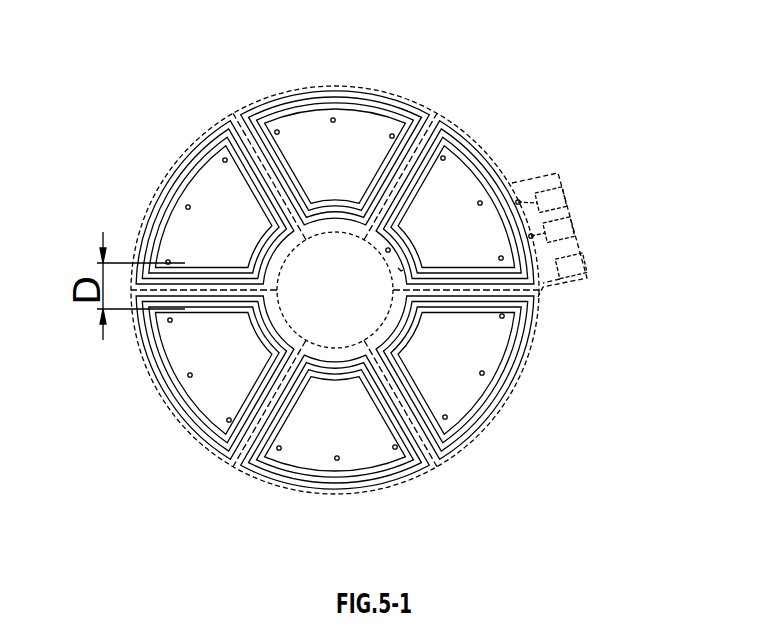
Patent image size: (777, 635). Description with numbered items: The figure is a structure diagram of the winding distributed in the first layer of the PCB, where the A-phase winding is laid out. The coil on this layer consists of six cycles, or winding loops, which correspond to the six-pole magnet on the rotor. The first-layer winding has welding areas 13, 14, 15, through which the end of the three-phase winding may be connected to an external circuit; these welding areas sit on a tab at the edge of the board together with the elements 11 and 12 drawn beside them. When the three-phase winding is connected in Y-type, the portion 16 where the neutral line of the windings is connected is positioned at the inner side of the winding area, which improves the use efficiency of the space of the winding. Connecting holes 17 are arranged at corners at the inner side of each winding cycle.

The lead-out terminal 11 is at (518, 202).
The connecting wire 12 is at (531, 236).
The welding area 13 is at (558, 196).
The welding area 14 is at (567, 229).
The welding area 15 is at (573, 265).
The portion where the natural line of the windings is connected 16 is at (389, 250).
The connecting holes 17 is at (277, 132).